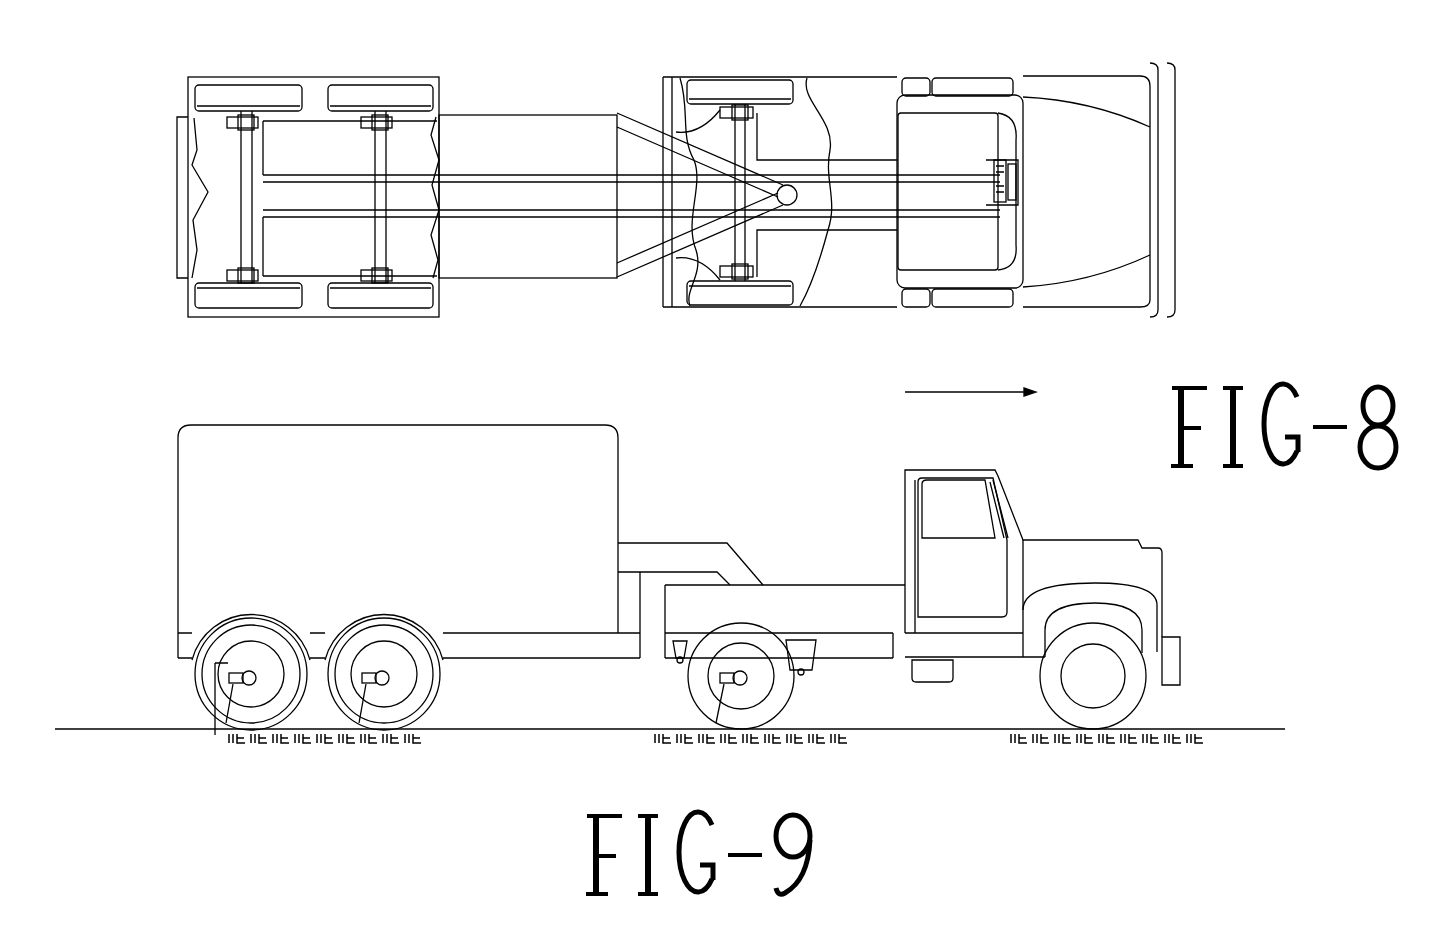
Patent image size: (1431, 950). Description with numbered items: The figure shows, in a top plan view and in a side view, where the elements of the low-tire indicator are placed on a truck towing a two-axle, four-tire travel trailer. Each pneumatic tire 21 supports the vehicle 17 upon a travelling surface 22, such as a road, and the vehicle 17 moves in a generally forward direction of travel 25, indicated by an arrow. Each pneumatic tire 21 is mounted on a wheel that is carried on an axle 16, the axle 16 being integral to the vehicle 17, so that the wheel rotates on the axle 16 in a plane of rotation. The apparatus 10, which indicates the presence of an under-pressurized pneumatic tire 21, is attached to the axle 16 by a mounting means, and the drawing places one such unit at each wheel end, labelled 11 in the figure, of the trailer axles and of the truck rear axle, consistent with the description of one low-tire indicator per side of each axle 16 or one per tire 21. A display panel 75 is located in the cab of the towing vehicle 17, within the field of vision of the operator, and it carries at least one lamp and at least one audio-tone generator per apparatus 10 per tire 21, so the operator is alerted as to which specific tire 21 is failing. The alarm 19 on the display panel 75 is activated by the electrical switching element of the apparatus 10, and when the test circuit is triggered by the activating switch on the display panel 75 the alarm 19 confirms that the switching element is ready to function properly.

In FIG. 9, the apparatus 10 is at (214, 688).
In FIG. 8, the wheel hub unit 11 is at (233, 130).
In FIG. 9, the wheel hub unit 11 is at (222, 712).
In FIG. 8, the axle 16 is at (250, 147).
In FIG. 8, the vehicle 17 is at (1057, 300).
In FIG. 9, the vehicle 17 is at (612, 458).
In FIG. 8, the alarm 19 is at (1024, 192).
In FIG. 8, the pneumatic tire 21 is at (253, 94).
In FIG. 9, the pneumatic tire 21 is at (262, 628).
In FIG. 8, the travelling surface 22 is at (559, 346).
In FIG. 9, the travelling surface 22 is at (971, 756).
In FIG. 8, the direction of travel 25 is at (954, 391).
In FIG. 8, the display panel 75 is at (1015, 163).